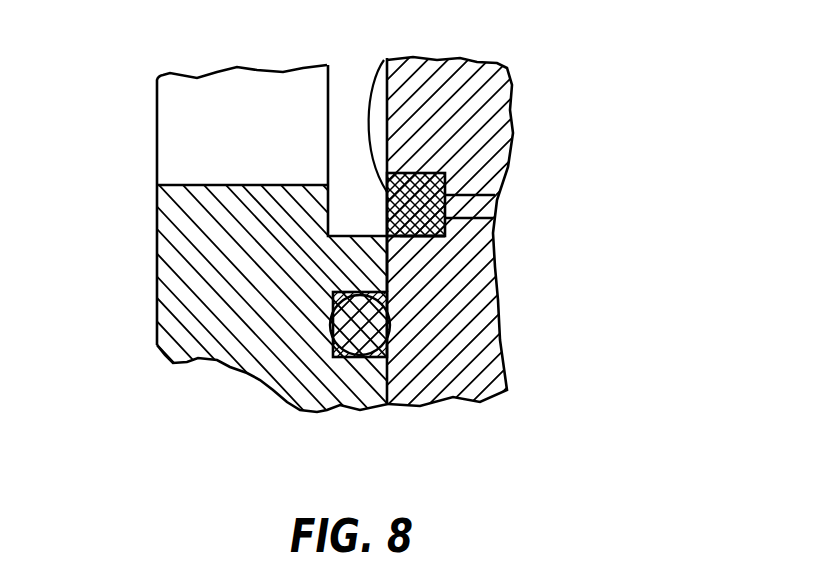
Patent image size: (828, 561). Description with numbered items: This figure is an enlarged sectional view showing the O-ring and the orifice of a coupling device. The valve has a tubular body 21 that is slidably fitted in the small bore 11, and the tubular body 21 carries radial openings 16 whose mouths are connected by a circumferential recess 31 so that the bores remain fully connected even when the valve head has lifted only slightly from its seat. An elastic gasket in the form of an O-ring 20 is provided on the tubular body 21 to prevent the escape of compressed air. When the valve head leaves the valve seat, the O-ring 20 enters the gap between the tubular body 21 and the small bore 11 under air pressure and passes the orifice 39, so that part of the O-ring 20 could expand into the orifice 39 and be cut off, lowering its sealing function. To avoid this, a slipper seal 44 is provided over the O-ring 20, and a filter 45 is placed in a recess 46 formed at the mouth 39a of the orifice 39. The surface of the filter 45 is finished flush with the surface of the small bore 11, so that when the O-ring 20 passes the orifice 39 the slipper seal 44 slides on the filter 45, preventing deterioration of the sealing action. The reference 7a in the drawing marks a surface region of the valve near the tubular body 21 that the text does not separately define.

The radial opening 16 is at (168, 107).
The tubular body 21 is at (174, 218).
The circumferential recess 31 is at (329, 106).
The mouth of the orifice 39a is at (385, 60).
The orifice 39 is at (463, 207).
The filter 45 is at (440, 212).
The recess 46 is at (425, 233).
The surface 7a is at (388, 262).
The O-ring 20 is at (347, 326).
The slipper seal 44 is at (375, 350).
The small bore 11 is at (386, 386).